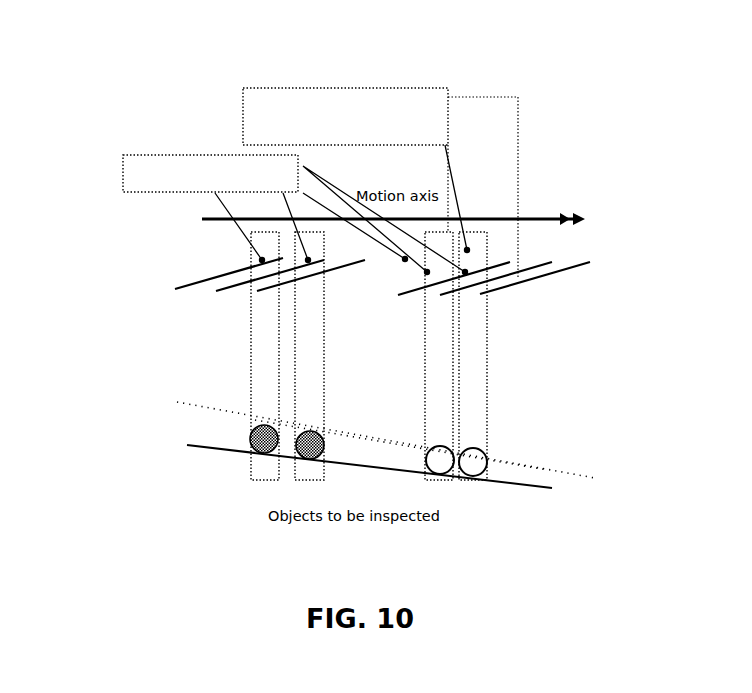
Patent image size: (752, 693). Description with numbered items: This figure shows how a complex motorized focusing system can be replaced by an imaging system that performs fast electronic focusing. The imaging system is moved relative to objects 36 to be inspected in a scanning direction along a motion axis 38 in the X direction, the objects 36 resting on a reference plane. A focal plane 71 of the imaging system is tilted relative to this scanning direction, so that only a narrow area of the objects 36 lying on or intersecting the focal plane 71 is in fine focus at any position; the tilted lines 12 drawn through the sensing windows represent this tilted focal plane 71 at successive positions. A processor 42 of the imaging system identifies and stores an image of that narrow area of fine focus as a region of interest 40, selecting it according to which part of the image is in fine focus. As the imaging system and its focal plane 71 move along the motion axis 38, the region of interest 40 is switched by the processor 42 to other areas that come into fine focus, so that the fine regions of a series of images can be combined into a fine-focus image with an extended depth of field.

The processor 42 is at (416, 91).
The region of interest (ROI) 40 is at (142, 194).
The motion axis 38 is at (556, 215).
The sensor scan lines 12 is at (177, 290).
The focal plane 71 is at (217, 411).
The objects to be inspected 36 is at (250, 437).